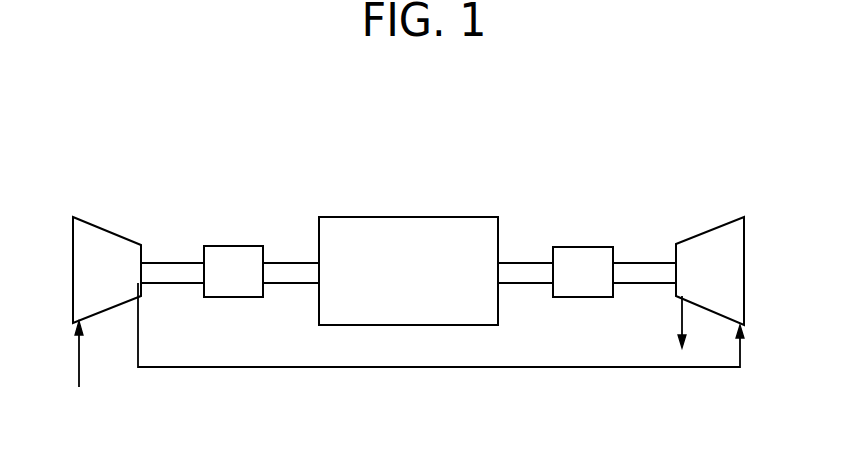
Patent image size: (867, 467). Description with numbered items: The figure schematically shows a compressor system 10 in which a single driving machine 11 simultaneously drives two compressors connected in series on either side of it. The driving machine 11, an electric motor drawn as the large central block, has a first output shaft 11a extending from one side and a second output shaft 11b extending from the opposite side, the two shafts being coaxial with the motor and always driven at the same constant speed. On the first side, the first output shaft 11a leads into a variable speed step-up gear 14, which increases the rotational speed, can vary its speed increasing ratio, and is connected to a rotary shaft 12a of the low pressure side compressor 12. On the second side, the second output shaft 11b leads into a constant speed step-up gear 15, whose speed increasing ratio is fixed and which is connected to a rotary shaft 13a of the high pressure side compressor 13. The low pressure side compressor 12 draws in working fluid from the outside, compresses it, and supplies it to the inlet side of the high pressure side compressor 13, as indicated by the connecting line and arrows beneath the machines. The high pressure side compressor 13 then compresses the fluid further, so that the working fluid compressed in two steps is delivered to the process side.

The compressor system 10 is at (656, 172).
The driving machine 11 is at (415, 217).
The first output shaft 11a is at (289, 284).
The second output shaft 11b is at (525, 284).
The low pressure side compressor 12 is at (118, 234).
The rotary shaft 12a is at (172, 284).
The high pressure side compressor 13 is at (702, 234).
The rotary shaft 13a is at (645, 284).
The variable speed step-up gear 14 is at (238, 245).
The constant speed step-up gear 15 is at (566, 246).